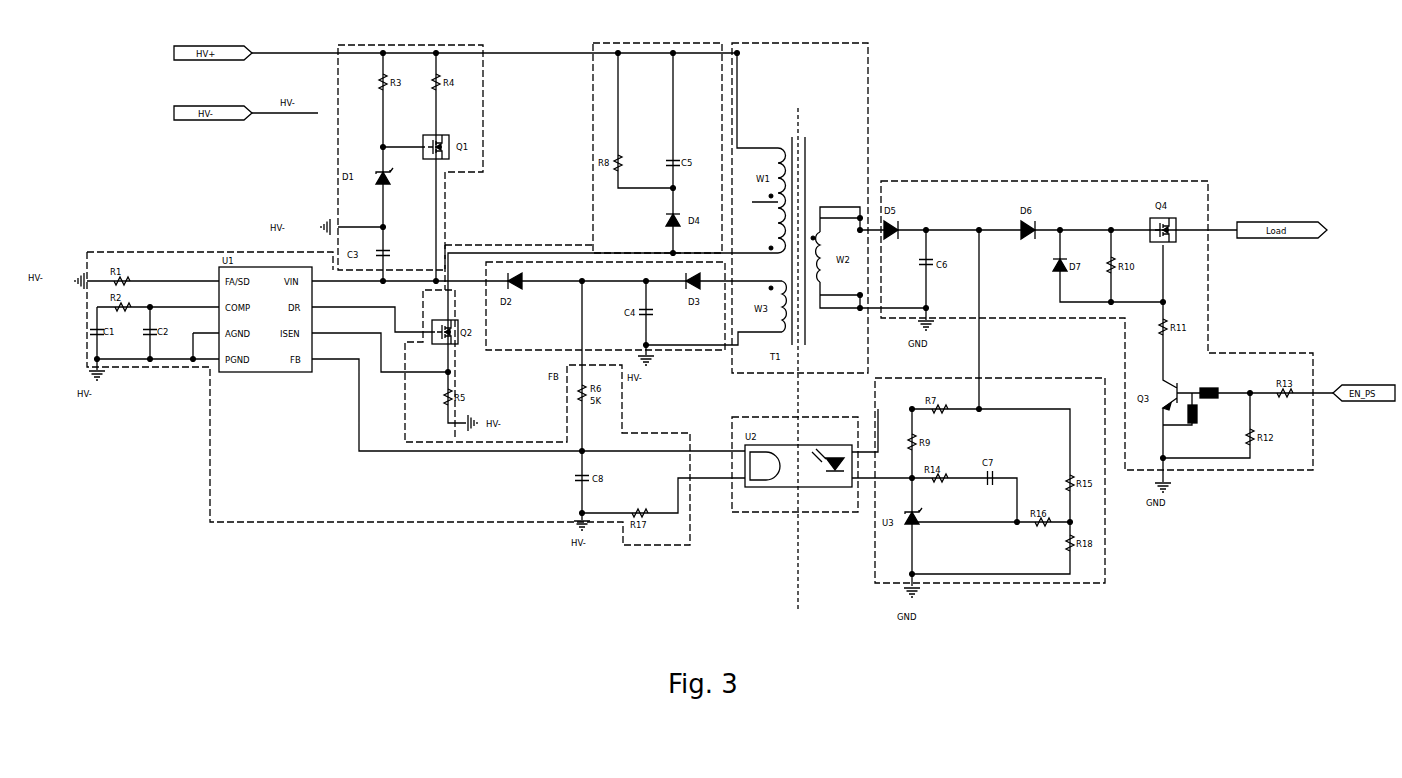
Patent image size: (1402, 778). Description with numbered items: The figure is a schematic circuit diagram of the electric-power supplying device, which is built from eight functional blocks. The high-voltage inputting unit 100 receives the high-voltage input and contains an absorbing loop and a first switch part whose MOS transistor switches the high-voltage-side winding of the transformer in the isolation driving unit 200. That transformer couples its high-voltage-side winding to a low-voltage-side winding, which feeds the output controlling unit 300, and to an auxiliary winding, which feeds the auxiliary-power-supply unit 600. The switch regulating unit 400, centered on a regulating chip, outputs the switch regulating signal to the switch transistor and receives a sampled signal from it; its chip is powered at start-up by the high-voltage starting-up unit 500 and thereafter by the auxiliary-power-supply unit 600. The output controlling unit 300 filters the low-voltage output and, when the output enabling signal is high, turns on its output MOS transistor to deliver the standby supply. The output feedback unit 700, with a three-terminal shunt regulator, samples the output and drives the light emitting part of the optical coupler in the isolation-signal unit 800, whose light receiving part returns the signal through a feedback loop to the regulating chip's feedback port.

The high-voltage inputting unit 100 is at (657, 141).
The isolation driving unit 200 is at (687, 318).
The output controlling unit 300 is at (1127, 325).
The switch regulating unit 400 is at (410, 390).
The high-voltage starting-up unit 500 is at (402, 155).
The auxiliary-power-supply unit 600 is at (547, 323).
The output feedback unit 700 is at (990, 490).
The isolation-signal unit 800 is at (822, 471).